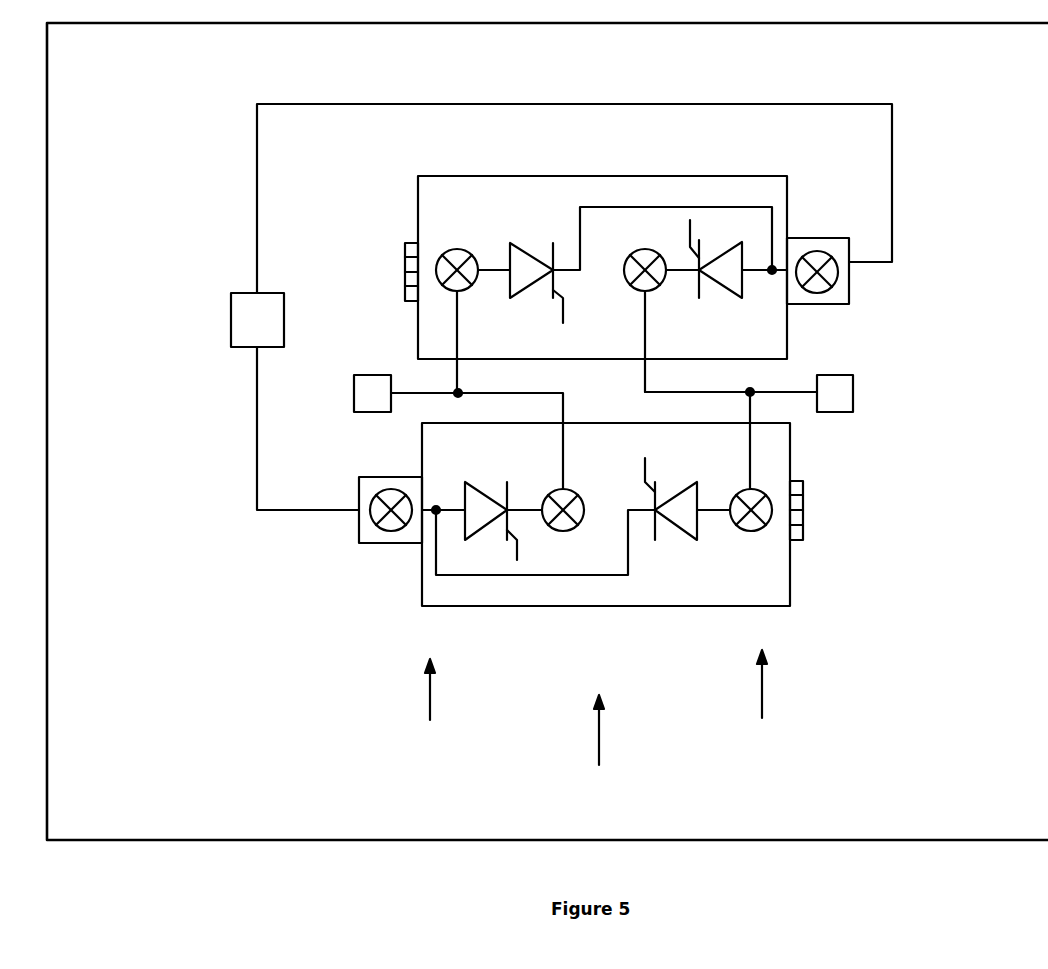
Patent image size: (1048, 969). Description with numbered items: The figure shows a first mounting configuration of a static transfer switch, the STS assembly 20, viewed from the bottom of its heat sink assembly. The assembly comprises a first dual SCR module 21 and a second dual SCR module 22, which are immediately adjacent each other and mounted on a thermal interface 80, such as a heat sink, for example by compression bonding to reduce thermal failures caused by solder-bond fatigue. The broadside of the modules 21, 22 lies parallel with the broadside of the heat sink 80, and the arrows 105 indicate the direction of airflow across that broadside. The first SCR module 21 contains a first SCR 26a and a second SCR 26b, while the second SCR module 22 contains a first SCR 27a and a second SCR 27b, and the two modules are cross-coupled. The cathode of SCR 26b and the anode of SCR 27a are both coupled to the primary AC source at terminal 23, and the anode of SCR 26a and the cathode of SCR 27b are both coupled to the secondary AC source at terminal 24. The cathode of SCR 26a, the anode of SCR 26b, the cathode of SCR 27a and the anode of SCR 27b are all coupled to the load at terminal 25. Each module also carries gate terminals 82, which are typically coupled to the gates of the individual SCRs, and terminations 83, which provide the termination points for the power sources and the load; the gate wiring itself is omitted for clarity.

The STS assembly 20 is at (923, 78).
The first dual SCR module 21 is at (787, 176).
The second dual SCR module 22 is at (790, 423).
The primary AC source terminal 23 is at (853, 390).
The secondary AC source terminal 24 is at (354, 405).
The load terminal 25 is at (231, 333).
The first SCR 26a is at (533, 252).
The second SCR 26b is at (720, 292).
The first SCR 27a is at (680, 531).
The second SCR 27b is at (492, 495).
The thermal interface 80 is at (182, 780).
The gate terminals 82 is at (405, 268).
The terminations 83 is at (470, 286).
The arrows 105 is at (430, 695).